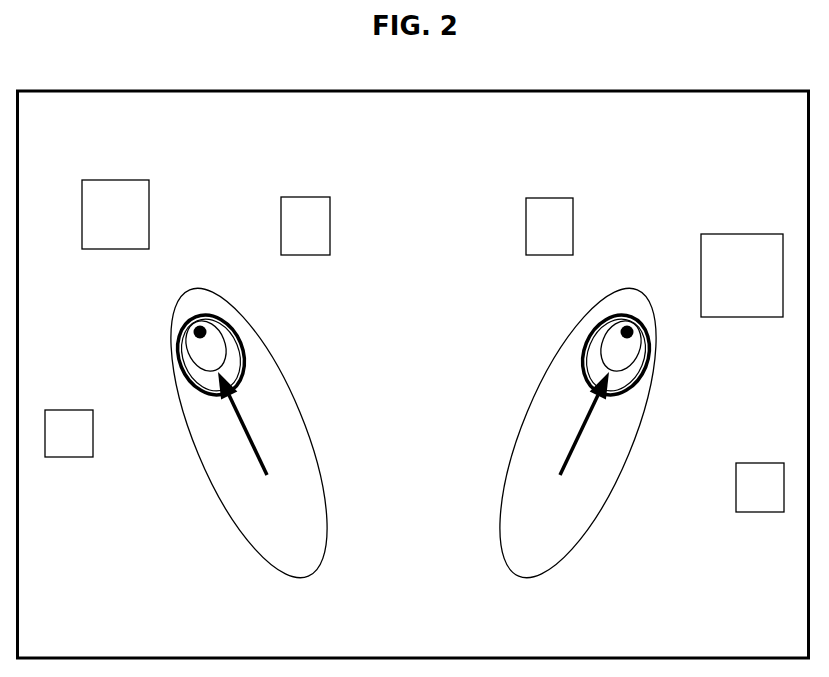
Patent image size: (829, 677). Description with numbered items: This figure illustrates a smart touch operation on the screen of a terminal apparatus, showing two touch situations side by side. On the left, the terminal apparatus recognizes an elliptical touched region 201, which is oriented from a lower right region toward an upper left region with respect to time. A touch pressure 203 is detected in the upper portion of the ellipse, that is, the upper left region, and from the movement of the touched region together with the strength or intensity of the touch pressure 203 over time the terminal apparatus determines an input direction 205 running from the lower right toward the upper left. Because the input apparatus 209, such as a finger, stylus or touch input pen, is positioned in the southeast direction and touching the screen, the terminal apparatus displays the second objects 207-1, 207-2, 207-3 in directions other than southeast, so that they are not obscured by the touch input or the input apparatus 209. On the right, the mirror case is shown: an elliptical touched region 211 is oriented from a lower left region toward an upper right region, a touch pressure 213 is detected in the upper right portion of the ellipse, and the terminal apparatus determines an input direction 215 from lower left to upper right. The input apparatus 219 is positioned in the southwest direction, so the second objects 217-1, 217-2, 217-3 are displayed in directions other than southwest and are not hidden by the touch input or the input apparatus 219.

The elliptical touched region 201 is at (243, 340).
The touch pressure 203 is at (212, 313).
The input direction 205 is at (250, 446).
The input apparatus 209 is at (275, 523).
The second object 207-1 is at (68, 410).
The second object 207-2 is at (113, 180).
The second object 207-3 is at (303, 197).
The elliptical touched region 211 is at (584, 340).
The touch pressure 213 is at (615, 313).
The input direction 215 is at (577, 446).
The input apparatus 219 is at (552, 523).
The second object 217-1 is at (757, 463).
The second object 217-2 is at (740, 234).
The second object 217-3 is at (549, 198).